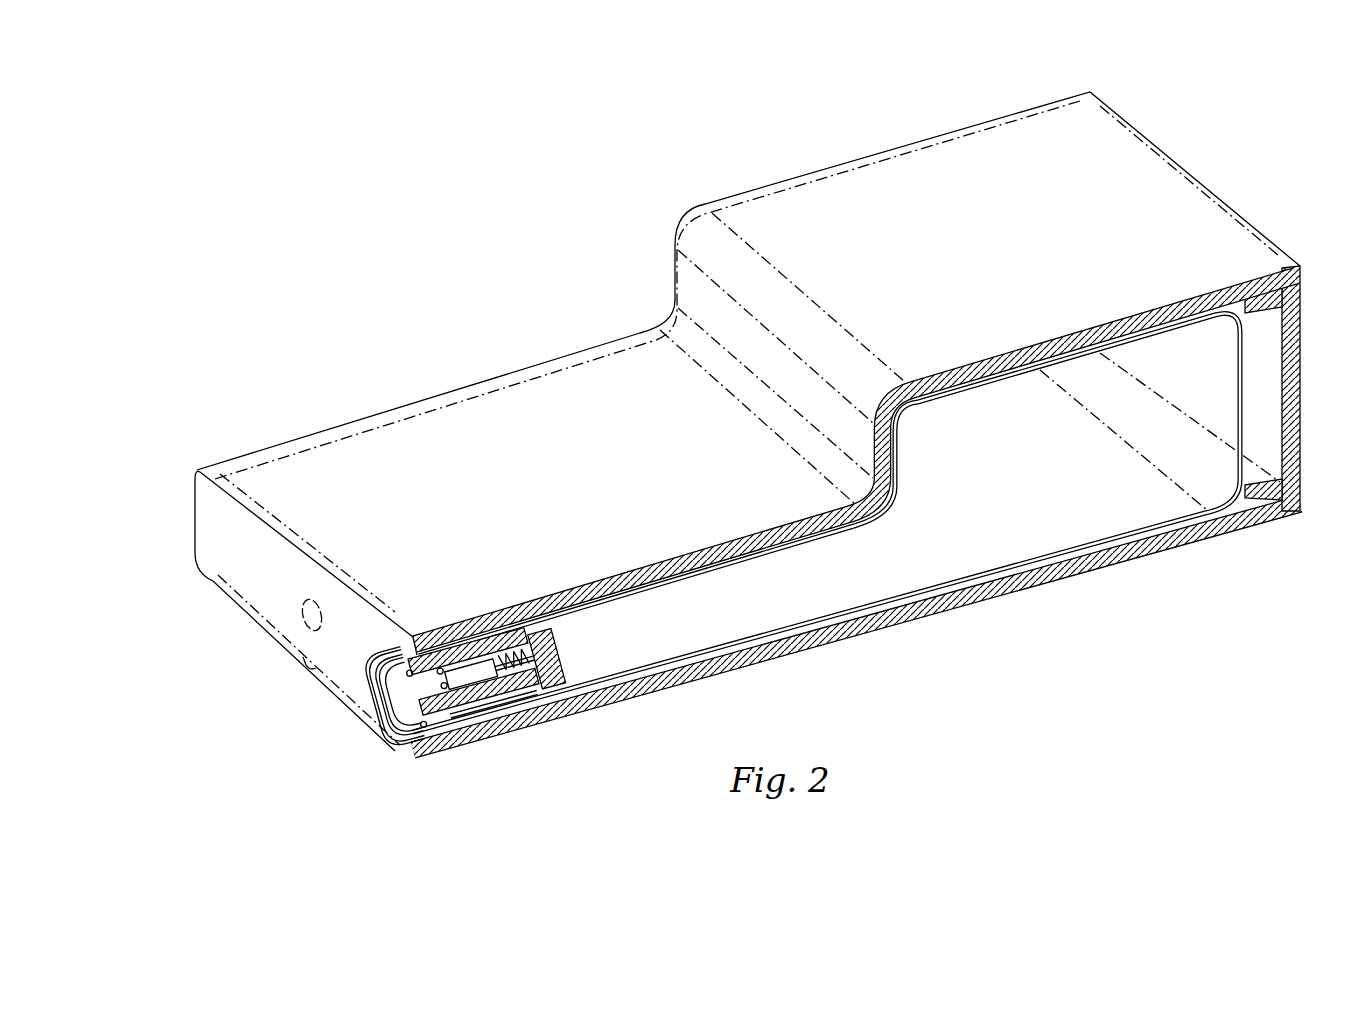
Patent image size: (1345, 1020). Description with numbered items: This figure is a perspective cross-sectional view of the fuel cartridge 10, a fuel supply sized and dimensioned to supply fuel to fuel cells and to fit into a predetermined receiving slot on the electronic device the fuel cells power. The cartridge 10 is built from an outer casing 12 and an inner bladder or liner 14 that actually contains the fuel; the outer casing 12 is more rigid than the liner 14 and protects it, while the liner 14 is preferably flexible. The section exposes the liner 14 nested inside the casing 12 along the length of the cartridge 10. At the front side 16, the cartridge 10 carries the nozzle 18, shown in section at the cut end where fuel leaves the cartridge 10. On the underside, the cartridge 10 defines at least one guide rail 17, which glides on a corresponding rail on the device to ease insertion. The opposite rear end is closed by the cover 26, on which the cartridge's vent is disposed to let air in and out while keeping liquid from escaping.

The fuel cartridge 10 is at (546, 310).
The outer casing 12 is at (543, 490).
The inner liner 14 is at (1242, 523).
The front side 16 is at (222, 578).
The guide rail 17 is at (312, 673).
The nozzle 18 is at (378, 745).
The cover 26 is at (1200, 185).